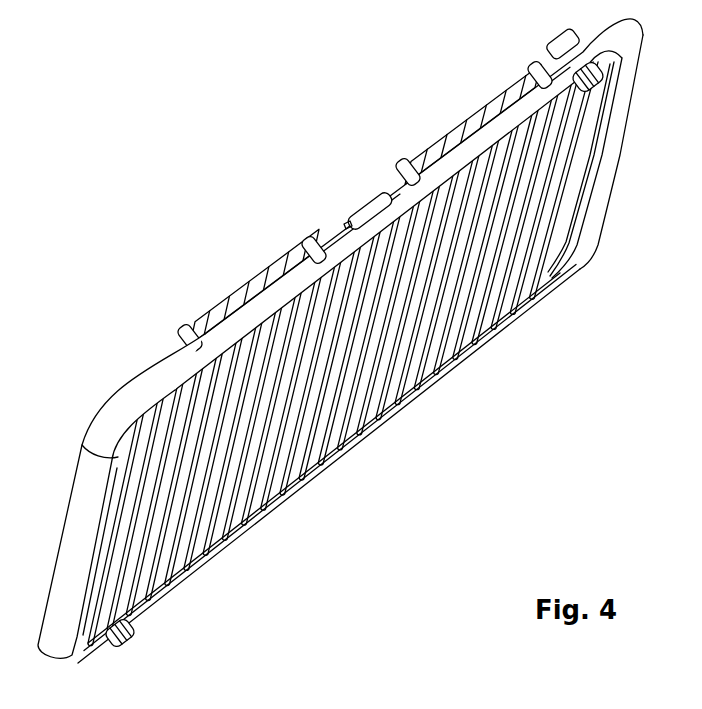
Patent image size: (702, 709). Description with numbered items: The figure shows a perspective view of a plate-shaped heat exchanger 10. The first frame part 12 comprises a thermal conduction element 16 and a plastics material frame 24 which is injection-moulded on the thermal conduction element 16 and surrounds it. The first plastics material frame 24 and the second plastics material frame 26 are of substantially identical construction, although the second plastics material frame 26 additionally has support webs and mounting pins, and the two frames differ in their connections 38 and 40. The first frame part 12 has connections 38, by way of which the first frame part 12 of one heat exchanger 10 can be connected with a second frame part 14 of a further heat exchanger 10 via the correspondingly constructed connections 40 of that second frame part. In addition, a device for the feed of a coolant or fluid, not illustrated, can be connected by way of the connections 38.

The plate-shaped heat exchanger 10 is at (348, 336).
The first frame part 12 is at (356, 449).
The second frame part 14 is at (130, 364).
The first thermal conduction element 16 is at (440, 328).
The first plastics material frame 24 is at (576, 265).
The second plastics material frame 26 is at (100, 413).
The connections 38 is at (596, 88).
The connections 40 is at (545, 43).